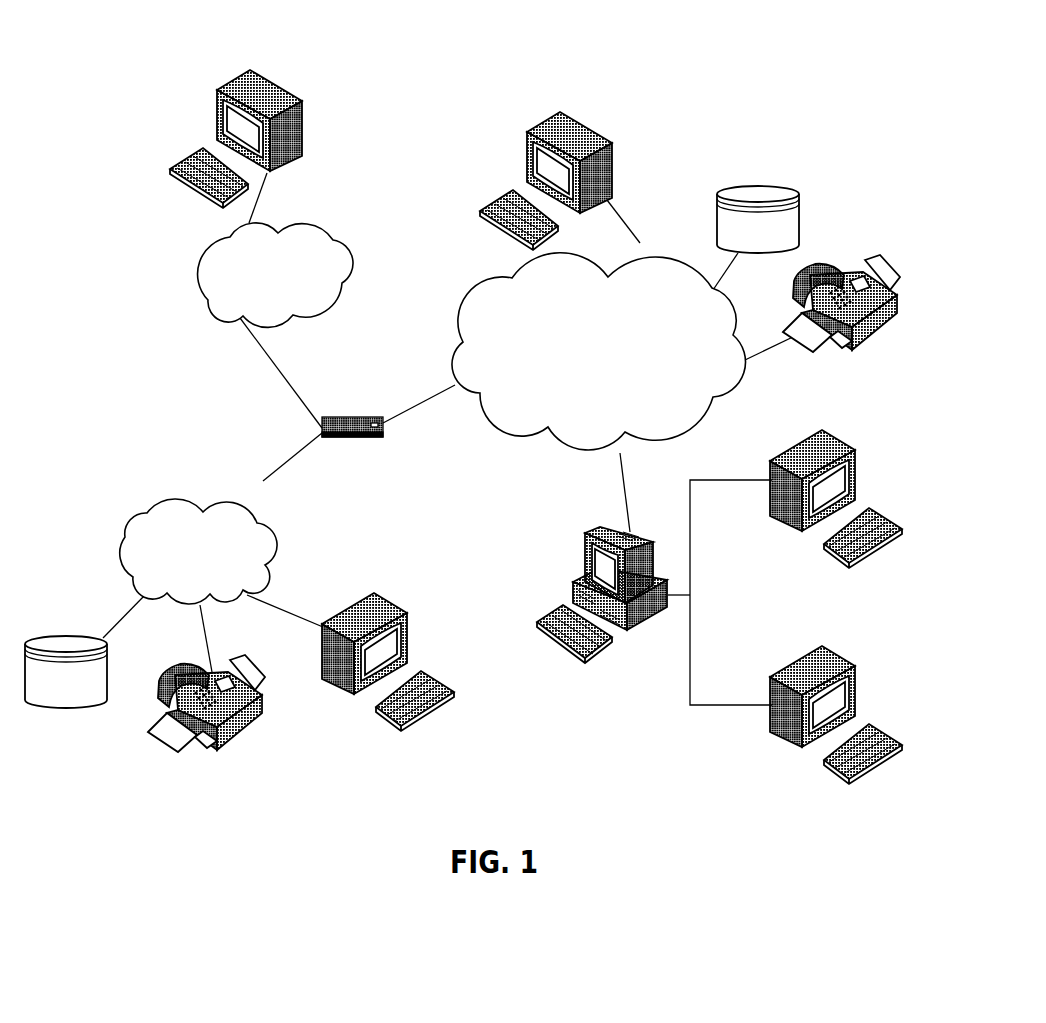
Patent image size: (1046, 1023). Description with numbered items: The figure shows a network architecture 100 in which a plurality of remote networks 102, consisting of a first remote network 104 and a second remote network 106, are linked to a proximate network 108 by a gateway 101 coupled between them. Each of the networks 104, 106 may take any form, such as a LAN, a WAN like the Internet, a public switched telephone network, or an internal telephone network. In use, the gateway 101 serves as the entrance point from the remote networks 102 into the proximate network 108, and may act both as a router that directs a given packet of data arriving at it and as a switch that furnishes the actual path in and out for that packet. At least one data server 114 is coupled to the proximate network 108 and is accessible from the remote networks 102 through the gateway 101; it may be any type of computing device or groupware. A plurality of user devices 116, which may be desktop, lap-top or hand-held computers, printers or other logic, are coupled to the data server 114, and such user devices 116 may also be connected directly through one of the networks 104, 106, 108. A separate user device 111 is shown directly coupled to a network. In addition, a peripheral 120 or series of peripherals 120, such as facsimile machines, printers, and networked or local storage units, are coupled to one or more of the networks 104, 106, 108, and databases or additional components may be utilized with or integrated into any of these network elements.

The architecture 100 is at (150, 55).
The gateway 101 is at (333, 415).
The remote networks 102 is at (178, 333).
The first remote network 104 is at (127, 523).
The second remote network 106 is at (345, 244).
The proximate network 108 is at (707, 417).
The user device 111 is at (610, 147).
The data server 114 is at (583, 545).
The user devices 116 is at (303, 112).
The peripheral 120 is at (68, 707).